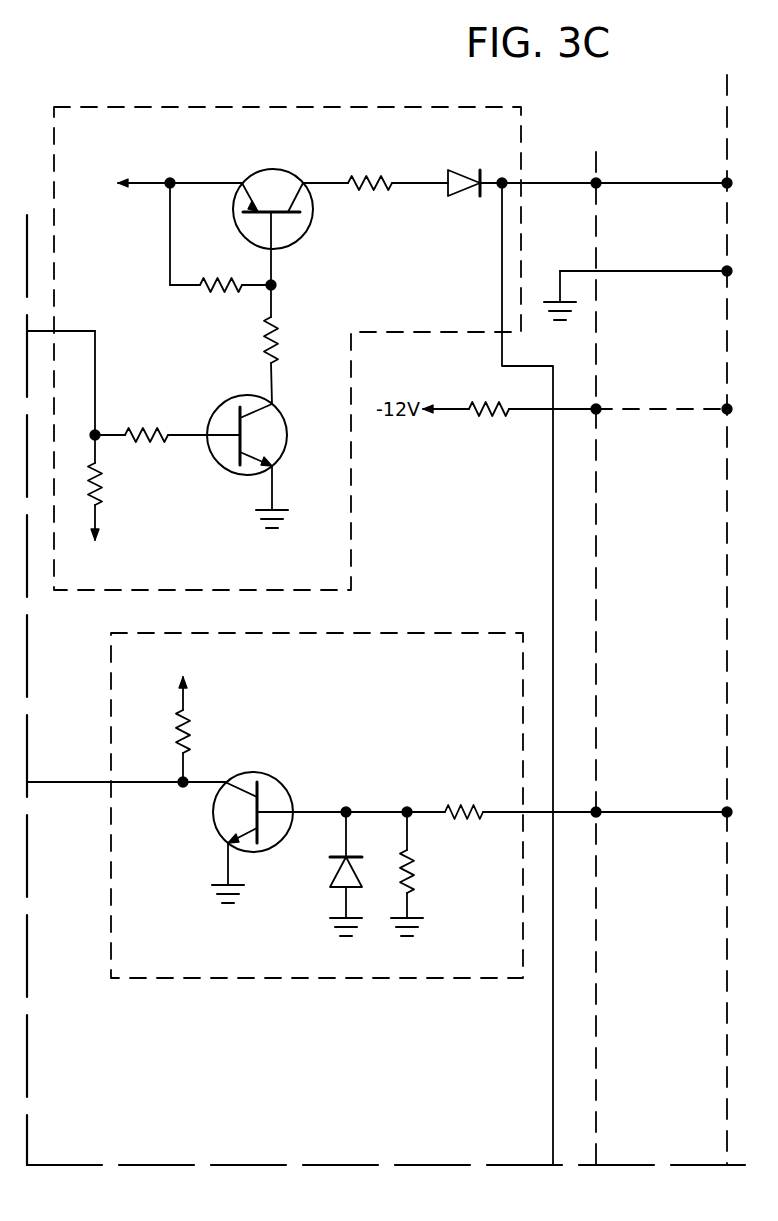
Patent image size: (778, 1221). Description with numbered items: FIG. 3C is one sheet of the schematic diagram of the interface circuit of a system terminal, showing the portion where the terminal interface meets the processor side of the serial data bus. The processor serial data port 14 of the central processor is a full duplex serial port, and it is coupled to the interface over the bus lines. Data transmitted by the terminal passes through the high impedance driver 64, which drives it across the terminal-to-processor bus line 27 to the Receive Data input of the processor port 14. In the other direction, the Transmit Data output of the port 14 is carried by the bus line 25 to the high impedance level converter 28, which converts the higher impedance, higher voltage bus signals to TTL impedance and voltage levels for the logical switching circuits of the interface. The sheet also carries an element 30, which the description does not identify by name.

The high impedance driver 64 is at (205, 107).
The high impedance level converter 28 is at (415, 633).
The processor serial data port 14 is at (727, 113).
The terminal-to-processor bus line 27 is at (610, 183).
The ground line 30 is at (622, 270).
The bus line 25 is at (575, 812).